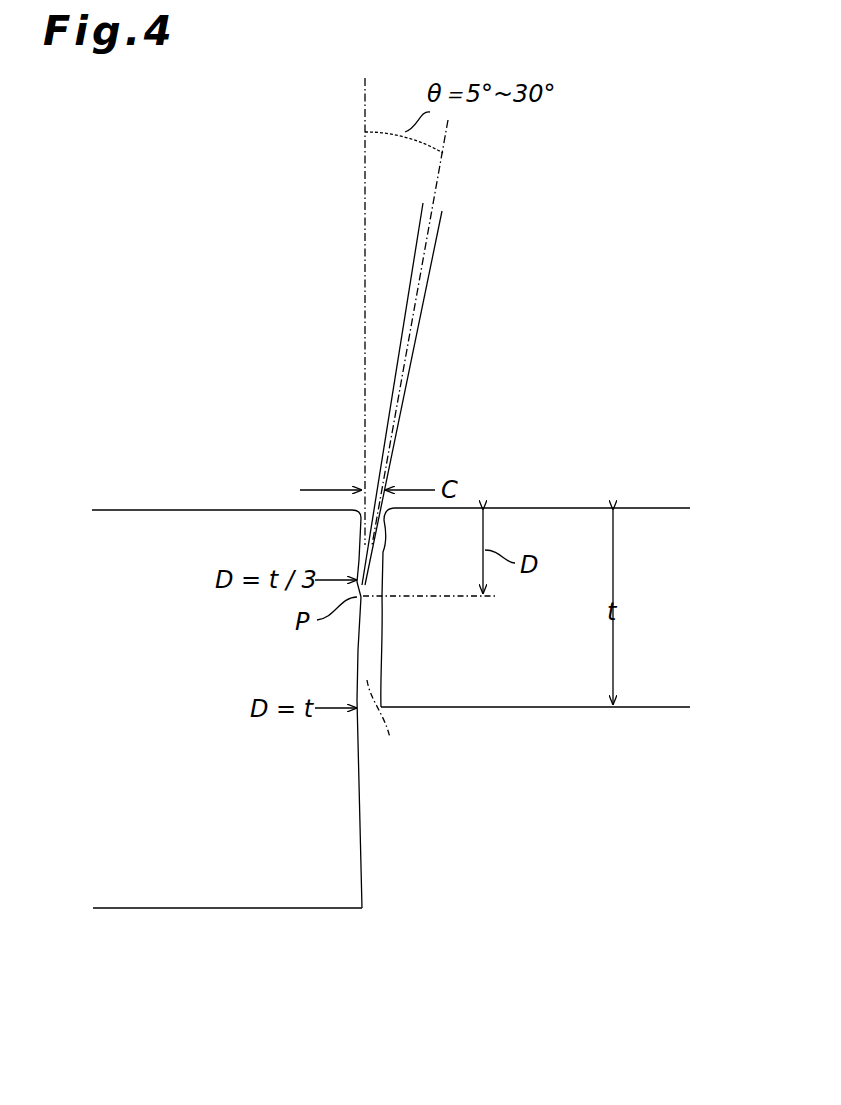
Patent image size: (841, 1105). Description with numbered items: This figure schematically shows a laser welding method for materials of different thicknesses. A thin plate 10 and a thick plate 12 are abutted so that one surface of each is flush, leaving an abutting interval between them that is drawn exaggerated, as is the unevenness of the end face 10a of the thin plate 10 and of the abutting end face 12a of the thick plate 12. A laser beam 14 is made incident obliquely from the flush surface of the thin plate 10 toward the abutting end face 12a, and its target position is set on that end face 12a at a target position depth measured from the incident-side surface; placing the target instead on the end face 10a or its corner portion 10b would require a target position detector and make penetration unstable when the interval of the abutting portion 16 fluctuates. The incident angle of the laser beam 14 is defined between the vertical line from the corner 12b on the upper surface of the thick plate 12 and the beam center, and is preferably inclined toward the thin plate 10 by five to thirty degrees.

The thin plate 10 is at (538, 571).
The end face of the thin plate 10a is at (385, 642).
The corner portion of the end face 10b is at (388, 517).
The thick plate 12 is at (227, 667).
The abutting end face of the thick plate 12a is at (358, 683).
The corner on the upper surface of the thick plate 12b is at (360, 521).
The laser beam 14 is at (432, 263).
The abutting portion 16 is at (388, 732).